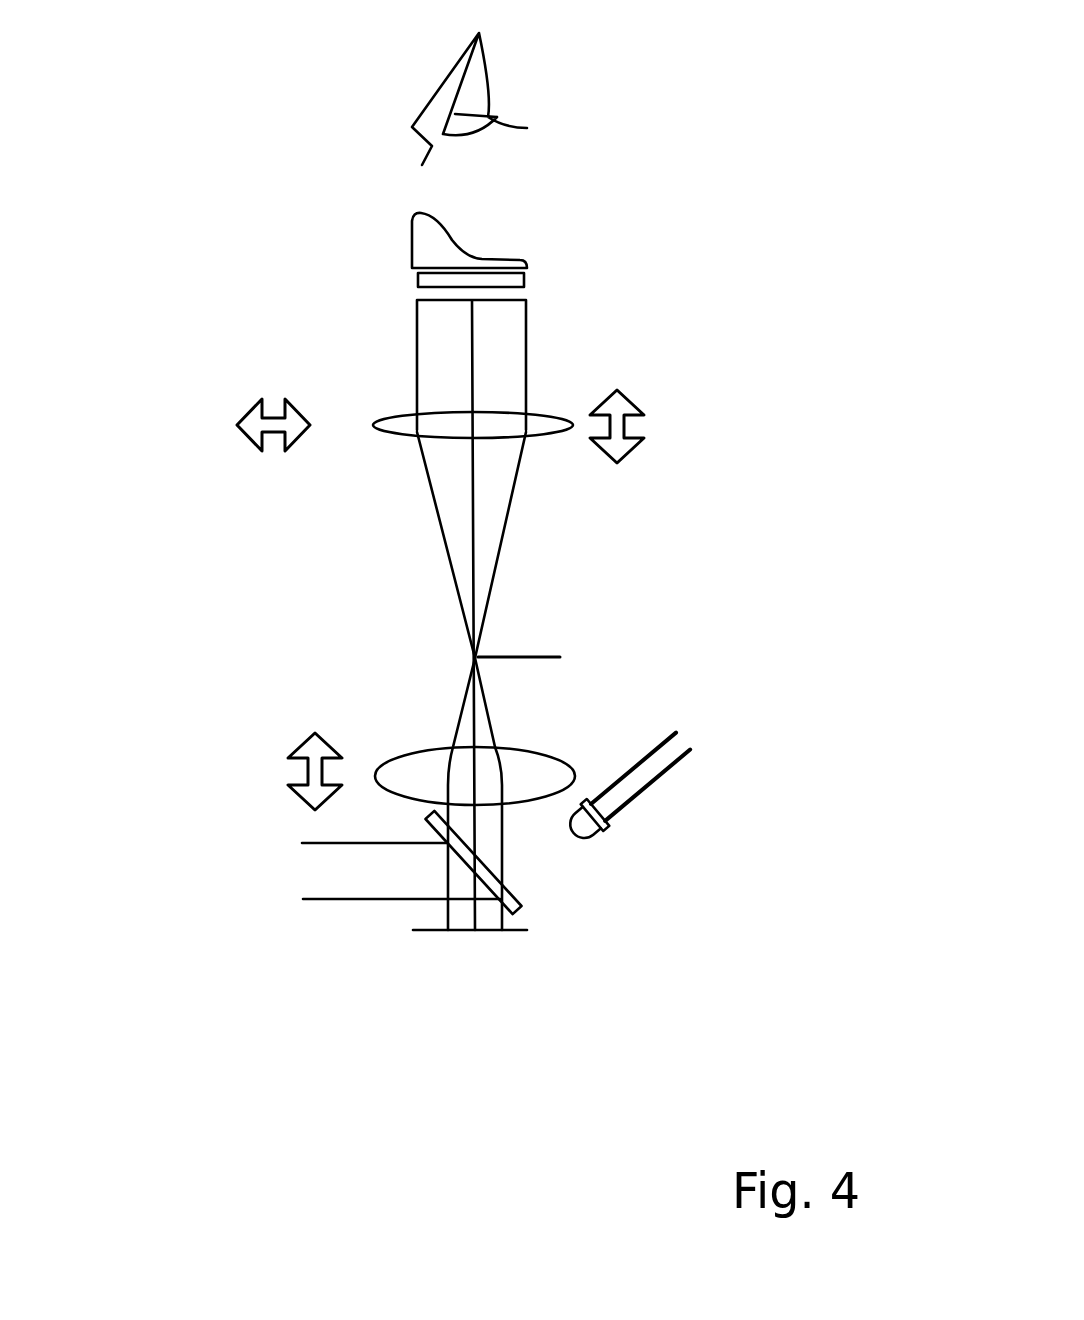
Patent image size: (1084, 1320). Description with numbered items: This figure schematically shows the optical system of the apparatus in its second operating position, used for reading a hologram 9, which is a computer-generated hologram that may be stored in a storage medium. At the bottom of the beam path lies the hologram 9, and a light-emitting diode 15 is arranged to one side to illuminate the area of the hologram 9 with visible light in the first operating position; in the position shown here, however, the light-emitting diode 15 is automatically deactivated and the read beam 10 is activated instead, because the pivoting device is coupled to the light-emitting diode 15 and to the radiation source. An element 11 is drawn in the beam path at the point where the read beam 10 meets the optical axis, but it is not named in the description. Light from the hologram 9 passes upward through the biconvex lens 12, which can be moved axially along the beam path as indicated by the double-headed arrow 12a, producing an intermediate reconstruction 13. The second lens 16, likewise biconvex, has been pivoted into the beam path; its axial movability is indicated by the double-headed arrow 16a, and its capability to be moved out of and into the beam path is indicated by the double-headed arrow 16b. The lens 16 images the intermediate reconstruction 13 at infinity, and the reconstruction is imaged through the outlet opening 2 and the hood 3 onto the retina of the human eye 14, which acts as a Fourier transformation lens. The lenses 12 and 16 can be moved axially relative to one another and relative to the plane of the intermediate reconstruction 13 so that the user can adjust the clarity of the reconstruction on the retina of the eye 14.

The human eye 14 is at (487, 90).
The hood 3 is at (427, 243).
The outlet opening 2 is at (525, 278).
The second lens 16 is at (388, 416).
The double-headed arrow 16a is at (635, 450).
The double-headed arrow 16b is at (243, 434).
The intermediate reconstruction 13 is at (537, 652).
The biconvex lens 12 is at (423, 750).
The double-headed arrow 12a is at (285, 739).
The read beam 10 is at (328, 877).
The beam splitter 11 is at (524, 902).
The light-emitting diode 15 is at (592, 836).
The hologram 9 is at (475, 933).